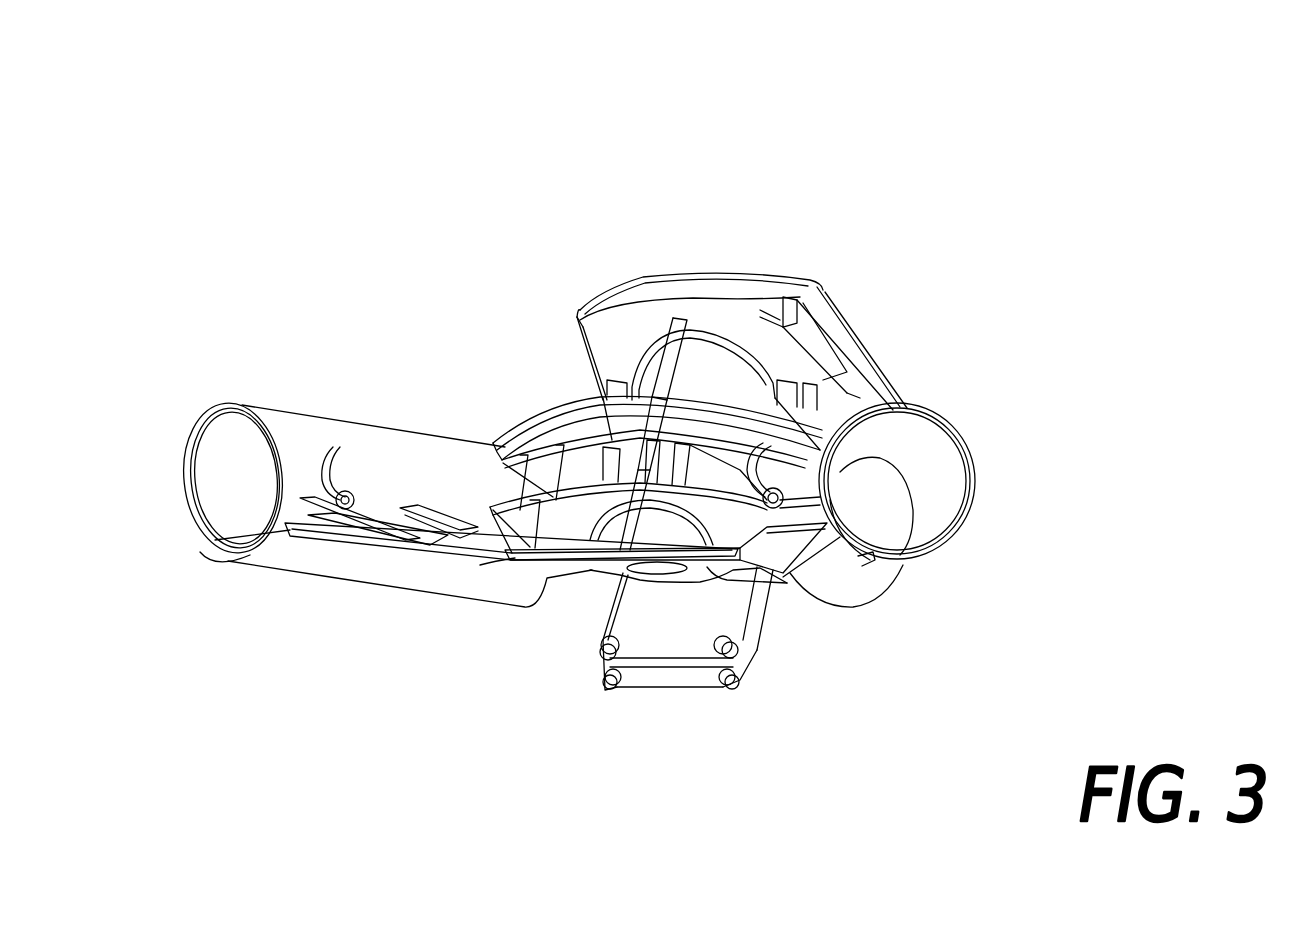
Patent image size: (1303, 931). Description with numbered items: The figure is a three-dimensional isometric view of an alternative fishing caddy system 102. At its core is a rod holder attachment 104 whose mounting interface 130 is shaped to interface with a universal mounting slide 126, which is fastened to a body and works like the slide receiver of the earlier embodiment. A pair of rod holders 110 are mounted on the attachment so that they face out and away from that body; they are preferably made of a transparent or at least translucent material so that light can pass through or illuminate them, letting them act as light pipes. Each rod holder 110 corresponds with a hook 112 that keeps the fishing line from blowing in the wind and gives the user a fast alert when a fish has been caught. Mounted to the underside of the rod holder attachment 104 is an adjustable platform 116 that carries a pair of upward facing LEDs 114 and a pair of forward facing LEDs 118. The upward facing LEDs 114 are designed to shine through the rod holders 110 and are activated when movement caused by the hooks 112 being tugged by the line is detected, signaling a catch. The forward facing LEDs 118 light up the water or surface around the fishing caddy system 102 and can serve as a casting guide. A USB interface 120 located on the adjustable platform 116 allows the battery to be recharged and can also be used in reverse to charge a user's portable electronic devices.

The fishing caddy system 102 is at (397, 160).
The rod holder attachment 104 is at (448, 700).
The rod holder 110 is at (278, 420).
The hook 112 is at (327, 447).
The upward facing LED 114 is at (603, 640).
The adjustable platform 116 is at (684, 645).
The forward facing LED 118 is at (603, 683).
The USB interface 120 is at (792, 618).
The universal mounting slide 126 is at (797, 273).
The mounting interface 130 is at (603, 307).